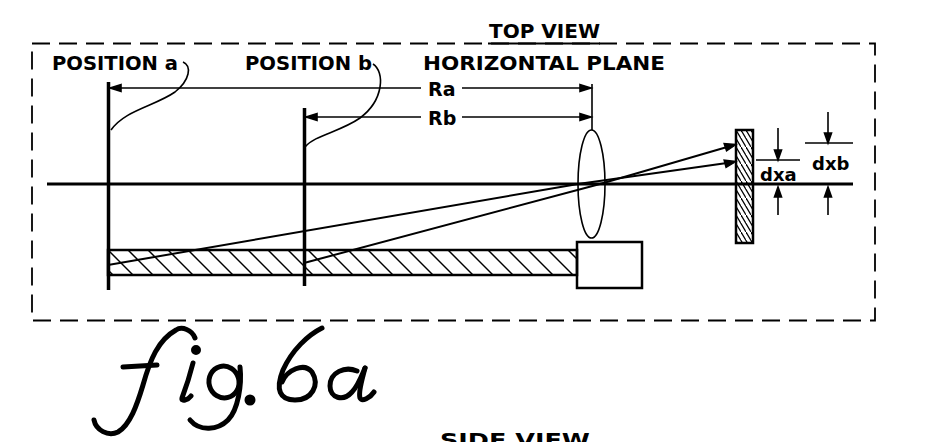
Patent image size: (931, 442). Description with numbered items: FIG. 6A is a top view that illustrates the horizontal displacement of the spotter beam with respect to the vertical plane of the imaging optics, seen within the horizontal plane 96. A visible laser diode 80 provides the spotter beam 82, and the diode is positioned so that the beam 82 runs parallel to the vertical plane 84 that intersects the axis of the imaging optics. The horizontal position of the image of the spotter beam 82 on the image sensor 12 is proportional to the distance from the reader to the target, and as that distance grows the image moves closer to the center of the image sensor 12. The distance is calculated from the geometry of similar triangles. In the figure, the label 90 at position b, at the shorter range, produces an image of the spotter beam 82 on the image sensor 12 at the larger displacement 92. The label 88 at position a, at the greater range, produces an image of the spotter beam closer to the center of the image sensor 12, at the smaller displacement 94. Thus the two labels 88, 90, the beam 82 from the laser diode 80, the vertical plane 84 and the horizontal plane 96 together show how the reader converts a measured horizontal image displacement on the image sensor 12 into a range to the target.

The image sensor 12 is at (753, 230).
The visible laser diode 80 is at (642, 265).
The spotter beam 82 is at (445, 276).
The vertical plane 84 is at (77, 183).
The label at position a 88 is at (110, 148).
The label at position b 90 is at (304, 164).
The displacement dxb 92 is at (734, 141).
The displacement dxa 94 is at (733, 164).
The horizontal plane 96 is at (735, 322).